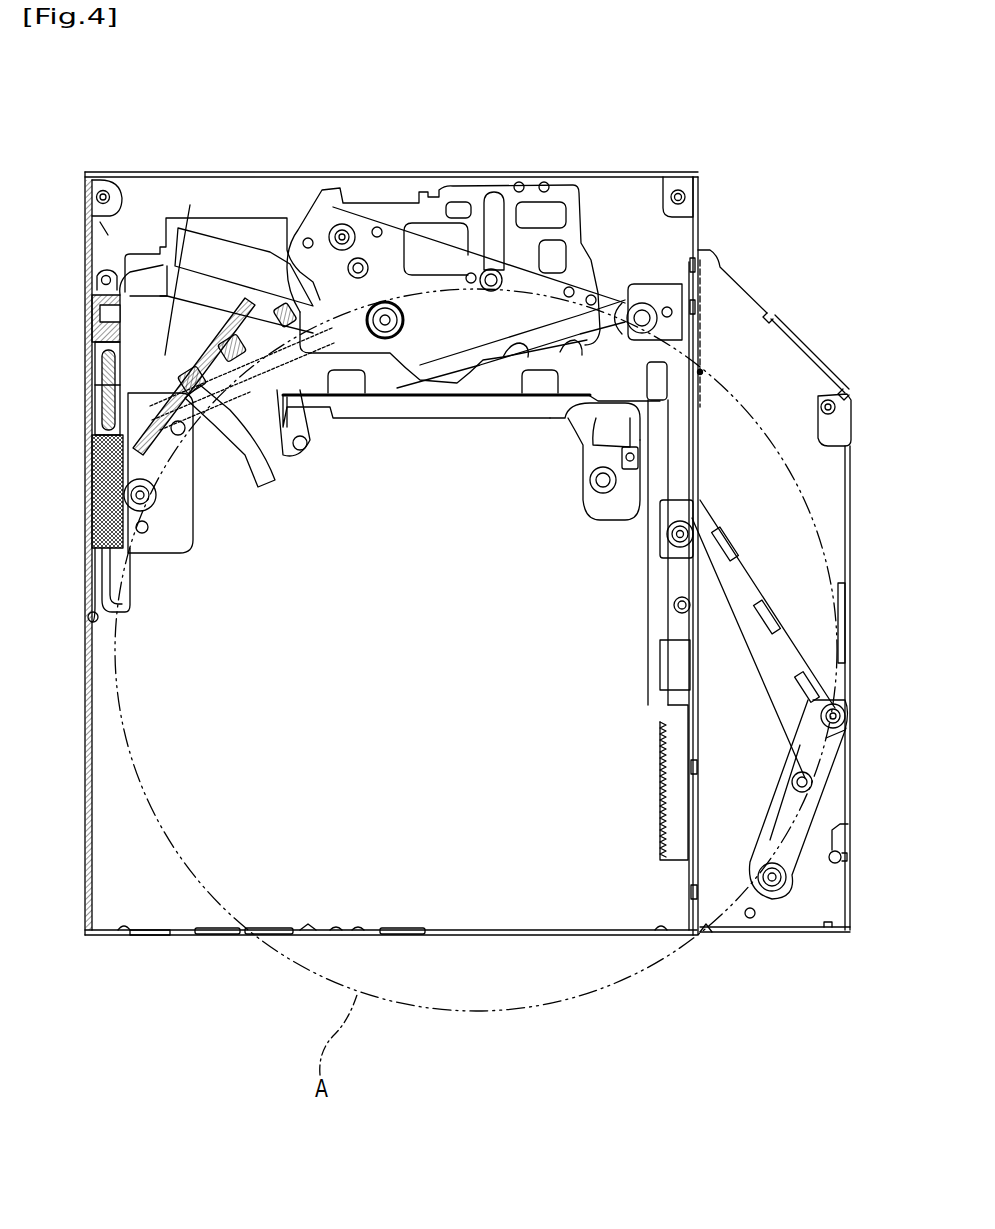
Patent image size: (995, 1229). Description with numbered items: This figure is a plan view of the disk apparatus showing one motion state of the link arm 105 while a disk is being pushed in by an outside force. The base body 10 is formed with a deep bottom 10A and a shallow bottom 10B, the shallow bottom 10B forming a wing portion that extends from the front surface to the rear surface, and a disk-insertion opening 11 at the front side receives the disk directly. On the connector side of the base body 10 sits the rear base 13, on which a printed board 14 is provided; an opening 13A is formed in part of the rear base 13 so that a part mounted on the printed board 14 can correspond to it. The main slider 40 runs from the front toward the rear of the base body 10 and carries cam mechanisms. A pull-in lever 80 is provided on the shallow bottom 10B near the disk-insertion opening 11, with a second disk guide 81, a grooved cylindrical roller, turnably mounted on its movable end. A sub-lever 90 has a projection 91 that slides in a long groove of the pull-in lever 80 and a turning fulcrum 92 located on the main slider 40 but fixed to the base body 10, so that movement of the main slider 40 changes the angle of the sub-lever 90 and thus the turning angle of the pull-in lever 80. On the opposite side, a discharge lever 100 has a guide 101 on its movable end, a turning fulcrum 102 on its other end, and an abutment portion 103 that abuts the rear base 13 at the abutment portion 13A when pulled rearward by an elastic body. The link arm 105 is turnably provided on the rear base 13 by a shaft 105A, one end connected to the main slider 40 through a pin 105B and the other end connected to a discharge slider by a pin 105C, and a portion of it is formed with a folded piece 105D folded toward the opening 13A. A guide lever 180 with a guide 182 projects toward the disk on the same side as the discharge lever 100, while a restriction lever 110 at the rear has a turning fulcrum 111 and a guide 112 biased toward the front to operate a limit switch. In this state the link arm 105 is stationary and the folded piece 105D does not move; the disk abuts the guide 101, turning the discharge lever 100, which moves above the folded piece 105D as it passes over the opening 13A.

The base body 10 is at (468, 617).
The deep bottom 10A is at (391, 598).
The shallow bottom 10B is at (728, 903).
The disk-insertion opening 11 is at (278, 937).
The rear base 13 is at (101, 188).
The opening (abutment portion) of rear base 13A is at (162, 293).
The printed board 14 is at (188, 225).
The main slider 40 is at (702, 407).
The pull-in lever 80 is at (773, 826).
The second disk guide 81 is at (783, 880).
The sub-lever 90 is at (790, 709).
The projection 91 is at (806, 782).
The turning fulcrum 92 is at (695, 510).
The discharge lever 100 is at (279, 390).
The guide 101 is at (343, 425).
The turning fulcrum 102 is at (84, 478).
The abutment portion 103 is at (280, 217).
The link arm 105 is at (212, 215).
The shaft 105A is at (393, 292).
The pin 105B is at (673, 312).
The pin 105C is at (82, 313).
The folded piece 105D is at (200, 287).
The restriction lever 110 is at (413, 250).
The turning fulcrum 111 is at (343, 230).
The guide 112 is at (644, 316).
The guide lever 180 is at (84, 433).
The guide 182 is at (86, 616).